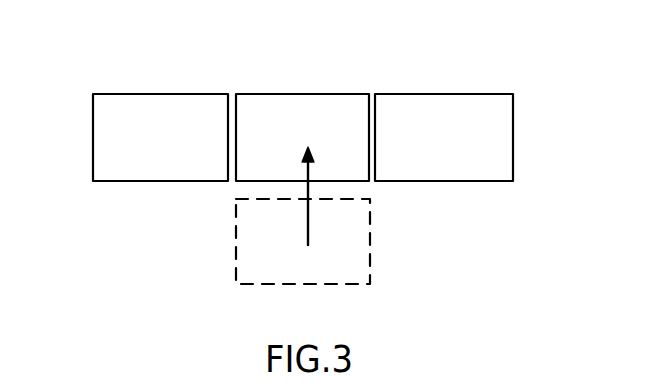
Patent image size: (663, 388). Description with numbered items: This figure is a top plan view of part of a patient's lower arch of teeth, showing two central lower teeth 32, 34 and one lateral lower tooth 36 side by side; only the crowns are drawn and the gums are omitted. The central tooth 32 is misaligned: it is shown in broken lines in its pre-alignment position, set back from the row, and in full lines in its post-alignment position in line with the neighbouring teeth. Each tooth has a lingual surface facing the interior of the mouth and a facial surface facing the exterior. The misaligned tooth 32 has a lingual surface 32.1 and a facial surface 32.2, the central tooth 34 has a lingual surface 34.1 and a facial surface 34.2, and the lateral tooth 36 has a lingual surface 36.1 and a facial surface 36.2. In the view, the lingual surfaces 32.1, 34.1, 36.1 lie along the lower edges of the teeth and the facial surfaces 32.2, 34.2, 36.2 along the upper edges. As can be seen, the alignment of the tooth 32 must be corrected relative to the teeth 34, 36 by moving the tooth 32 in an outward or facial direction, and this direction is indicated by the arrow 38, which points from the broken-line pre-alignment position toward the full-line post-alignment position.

The central lower tooth 32 is at (312, 106).
The lingual surface 32.1 is at (270, 181).
The facial surface 32.2 is at (281, 94).
The central lower tooth 34 is at (500, 140).
The lingual surface 34.1 is at (470, 181).
The facial surface 34.2 is at (465, 94).
The lateral lower tooth 36 is at (105, 154).
The lingual surface 36.1 is at (153, 181).
The facial surface 36.2 is at (150, 94).
The arrow 38 is at (312, 222).